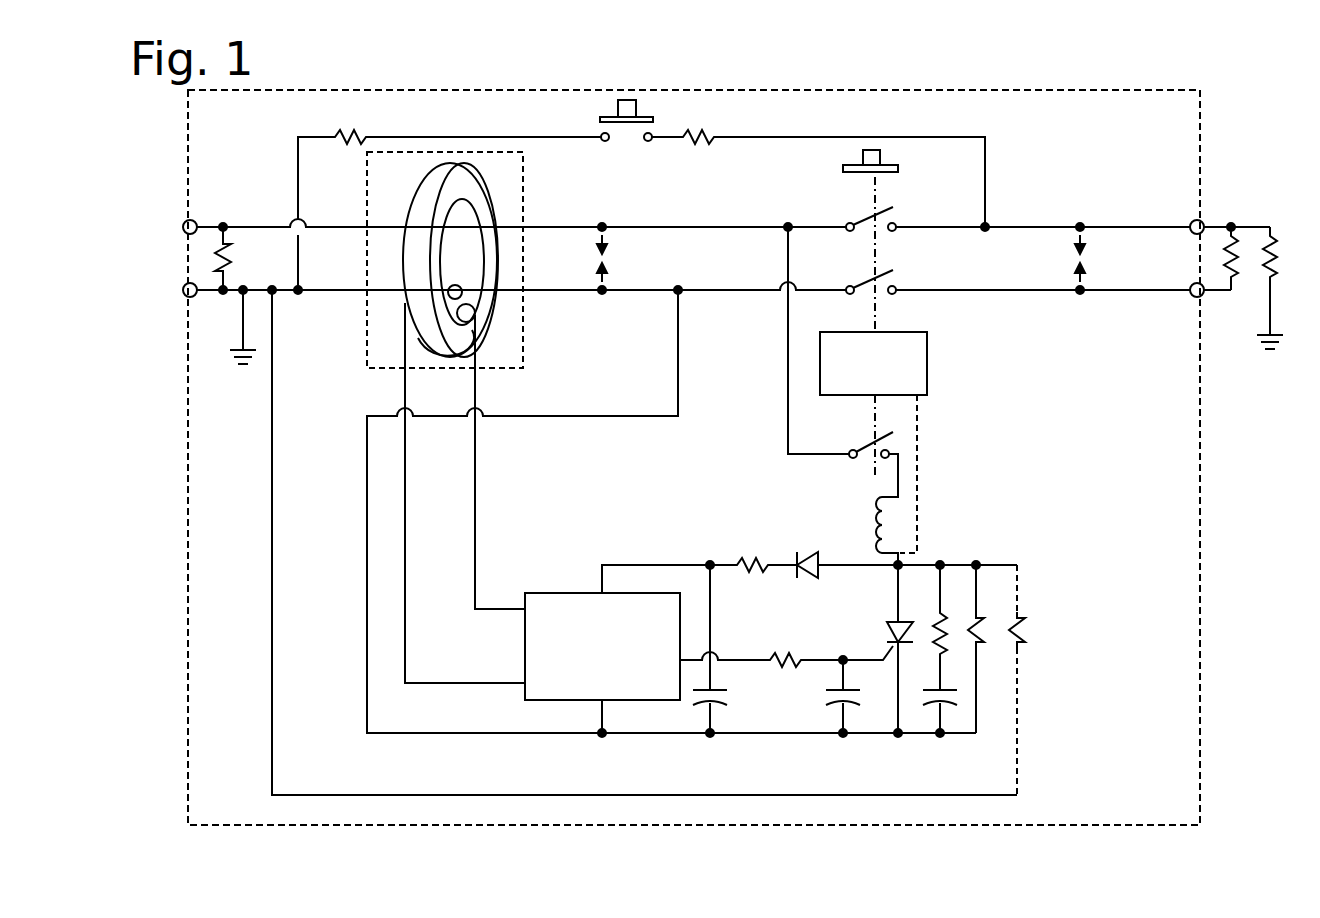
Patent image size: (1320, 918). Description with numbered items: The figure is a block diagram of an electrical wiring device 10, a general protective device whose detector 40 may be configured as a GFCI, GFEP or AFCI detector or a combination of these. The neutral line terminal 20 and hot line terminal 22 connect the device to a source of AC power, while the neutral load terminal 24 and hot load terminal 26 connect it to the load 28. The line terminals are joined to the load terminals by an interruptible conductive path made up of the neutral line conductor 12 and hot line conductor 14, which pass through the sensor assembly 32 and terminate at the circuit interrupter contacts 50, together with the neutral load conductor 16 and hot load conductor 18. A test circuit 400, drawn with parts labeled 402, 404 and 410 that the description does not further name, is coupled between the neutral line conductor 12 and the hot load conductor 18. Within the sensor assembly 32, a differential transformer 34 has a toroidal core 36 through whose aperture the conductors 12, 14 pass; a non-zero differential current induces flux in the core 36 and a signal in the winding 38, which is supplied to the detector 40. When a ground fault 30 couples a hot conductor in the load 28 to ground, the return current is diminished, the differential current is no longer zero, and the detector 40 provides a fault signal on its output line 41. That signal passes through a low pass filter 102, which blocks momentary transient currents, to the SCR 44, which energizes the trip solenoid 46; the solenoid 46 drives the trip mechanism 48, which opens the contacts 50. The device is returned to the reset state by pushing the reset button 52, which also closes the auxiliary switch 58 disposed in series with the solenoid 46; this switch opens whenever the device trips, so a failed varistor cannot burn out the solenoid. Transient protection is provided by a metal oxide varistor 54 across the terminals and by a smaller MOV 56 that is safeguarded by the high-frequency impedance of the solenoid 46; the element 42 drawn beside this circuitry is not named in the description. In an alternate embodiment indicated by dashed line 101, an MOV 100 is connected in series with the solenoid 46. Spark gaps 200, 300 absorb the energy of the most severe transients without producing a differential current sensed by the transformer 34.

The electrical wiring device 10 is at (1040, 82).
The neutral line conductor 12 is at (300, 296).
The hot line conductor 14 is at (312, 232).
The neutral load conductor 16 is at (1012, 297).
The hot load conductor 18 is at (1020, 232).
The neutral line terminal 20 is at (183, 285).
The hot line terminal 22 is at (183, 222).
The neutral load terminal 24 is at (1205, 297).
The hot load terminal 26 is at (1205, 222).
The load 28 is at (1240, 245).
The ground fault 30 is at (1278, 258).
The sensor assembly 32 is at (527, 155).
The differential transformer 34 is at (492, 190).
The toroidal core 36 is at (418, 206).
The winding 38 is at (478, 333).
The fault detector 40 is at (526, 592).
The detector output line 41 is at (748, 656).
The rectifier circuit 42 is at (757, 532).
The SCR 44 is at (888, 626).
The trip solenoid 46 is at (876, 518).
The trip mechanism 48 is at (930, 350).
The circuit interrupter contacts 50 is at (893, 210).
The reset button 52 is at (845, 169).
The metal oxide varistor 54 is at (232, 255).
The MOV 56 is at (980, 600).
The auxiliary switch 58 is at (888, 450).
The MOV 100 is at (1025, 626).
The dashed line 101 is at (1020, 736).
The low pass filter 102 is at (822, 682).
The spark gap 200 is at (604, 220).
The spark gap 300 is at (1078, 220).
The test circuit 400 is at (427, 114).
The test button 402 is at (625, 97).
The test contacts 404 is at (649, 143).
The test resistor wire 410 is at (822, 136).